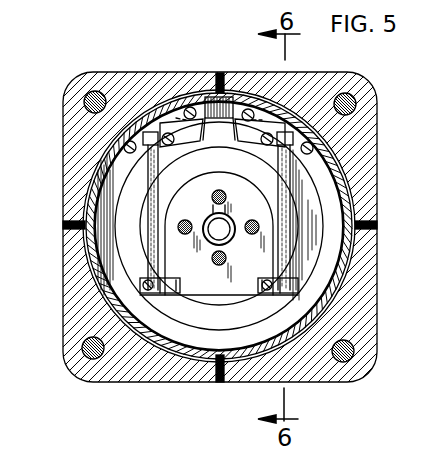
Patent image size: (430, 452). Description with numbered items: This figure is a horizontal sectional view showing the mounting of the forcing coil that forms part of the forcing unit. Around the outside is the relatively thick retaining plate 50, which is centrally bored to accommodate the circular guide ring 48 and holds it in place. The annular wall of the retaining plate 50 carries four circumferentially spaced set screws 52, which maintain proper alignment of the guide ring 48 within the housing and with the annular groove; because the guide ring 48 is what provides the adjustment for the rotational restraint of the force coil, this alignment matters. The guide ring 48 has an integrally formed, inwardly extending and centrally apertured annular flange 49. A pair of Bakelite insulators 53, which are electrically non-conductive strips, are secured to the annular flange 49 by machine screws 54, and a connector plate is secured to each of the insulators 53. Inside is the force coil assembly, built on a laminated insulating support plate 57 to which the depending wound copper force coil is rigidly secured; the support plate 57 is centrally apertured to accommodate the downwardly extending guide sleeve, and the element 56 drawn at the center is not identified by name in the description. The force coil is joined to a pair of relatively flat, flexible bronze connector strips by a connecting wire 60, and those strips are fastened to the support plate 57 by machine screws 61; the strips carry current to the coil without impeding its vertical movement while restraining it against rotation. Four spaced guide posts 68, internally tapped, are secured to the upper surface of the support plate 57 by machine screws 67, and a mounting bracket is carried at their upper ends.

The circular guide ring 48 is at (103, 381).
The annular flange 49 is at (328, 284).
The retaining plate 50 is at (363, 313).
The set screws 52 is at (221, 72).
The insulators 53 is at (278, 113).
The machine screws 54 is at (195, 110).
The cylindrical member 56 is at (303, 222).
The laminated insulating support plate 57 is at (200, 291).
The connecting wire 60 is at (150, 289).
The machine screws 61 is at (268, 292).
The machine screws 67 is at (178, 173).
The guide posts 68 is at (167, 247).